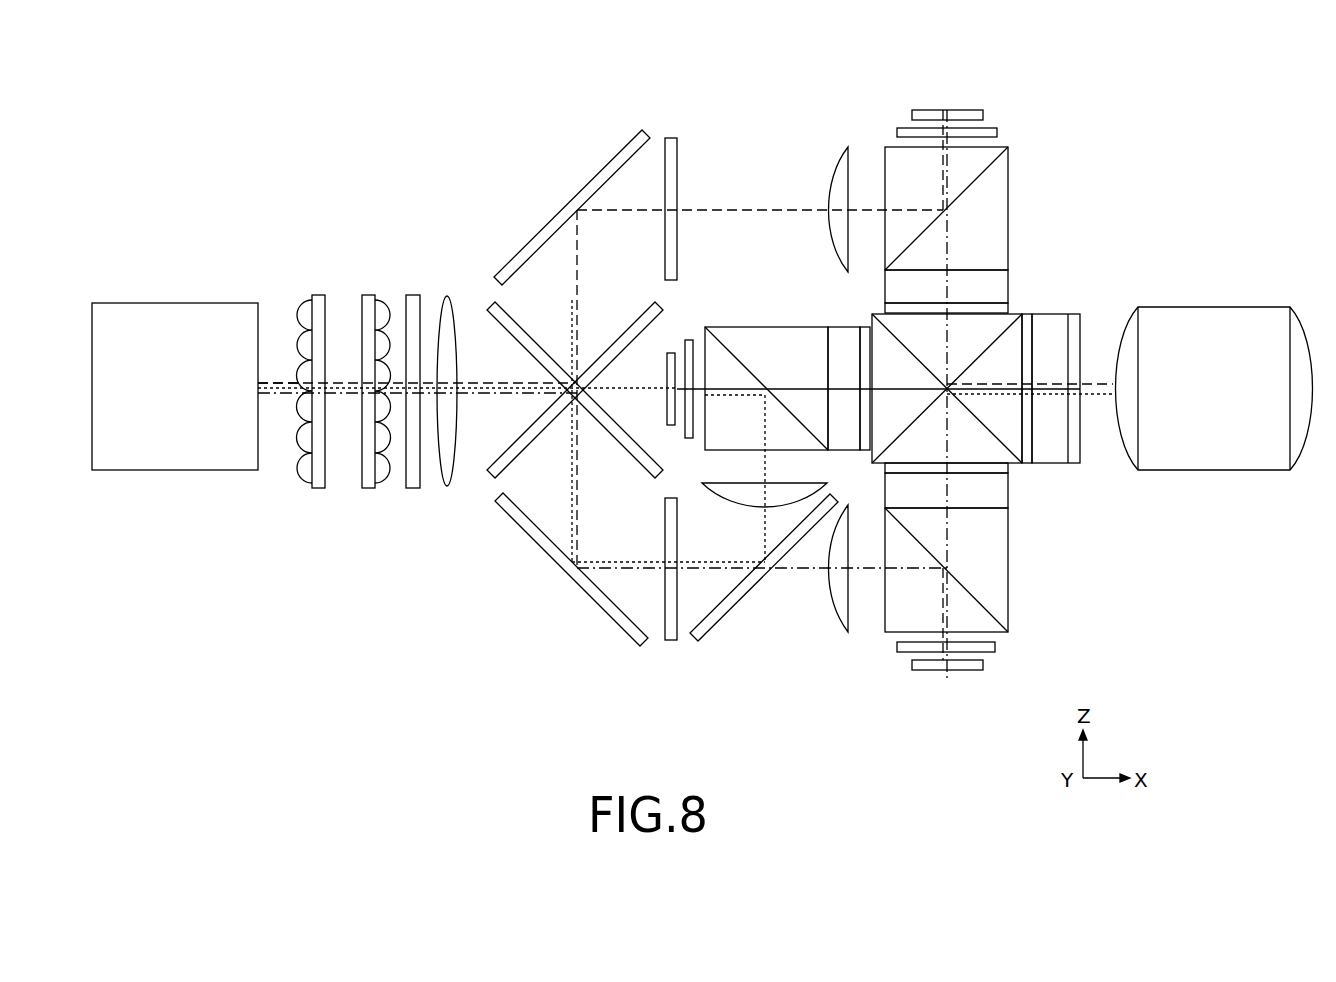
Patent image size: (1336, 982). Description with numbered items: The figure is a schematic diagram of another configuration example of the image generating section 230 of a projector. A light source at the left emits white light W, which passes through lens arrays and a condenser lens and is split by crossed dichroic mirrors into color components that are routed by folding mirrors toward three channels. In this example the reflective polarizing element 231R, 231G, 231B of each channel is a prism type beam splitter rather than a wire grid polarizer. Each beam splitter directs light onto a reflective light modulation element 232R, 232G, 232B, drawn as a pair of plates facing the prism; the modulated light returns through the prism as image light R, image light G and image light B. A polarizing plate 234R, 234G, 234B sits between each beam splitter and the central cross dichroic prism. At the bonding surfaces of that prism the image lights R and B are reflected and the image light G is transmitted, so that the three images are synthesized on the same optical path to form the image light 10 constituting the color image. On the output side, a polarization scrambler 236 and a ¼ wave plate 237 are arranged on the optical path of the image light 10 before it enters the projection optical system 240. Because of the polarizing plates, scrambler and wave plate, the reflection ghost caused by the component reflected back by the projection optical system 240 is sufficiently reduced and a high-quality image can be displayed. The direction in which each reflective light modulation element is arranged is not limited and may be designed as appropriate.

The image light 10 is at (1104, 384).
The image generating section 230 is at (1045, 138).
The reflective polarizing element 231R is at (1008, 195).
The reflective polarizing element 231G is at (753, 326).
The reflective polarizing element 231B is at (1008, 606).
The reflective light modulation element 232R is at (920, 108).
The reflective light modulation element 232G is at (665, 418).
The reflective light modulation element 232B is at (920, 673).
The polarizing plate 234R is at (1010, 308).
The polarizing plate 234G is at (863, 325).
The polarizing plate 234B is at (1010, 465).
The polarization scrambler 236 is at (1023, 465).
The ¼ wave plate 237 is at (1073, 465).
The projection optical system 240 is at (1200, 306).
The white light W is at (280, 380).
The image light R is at (748, 210).
The image light G is at (765, 470).
The image light B is at (800, 570).